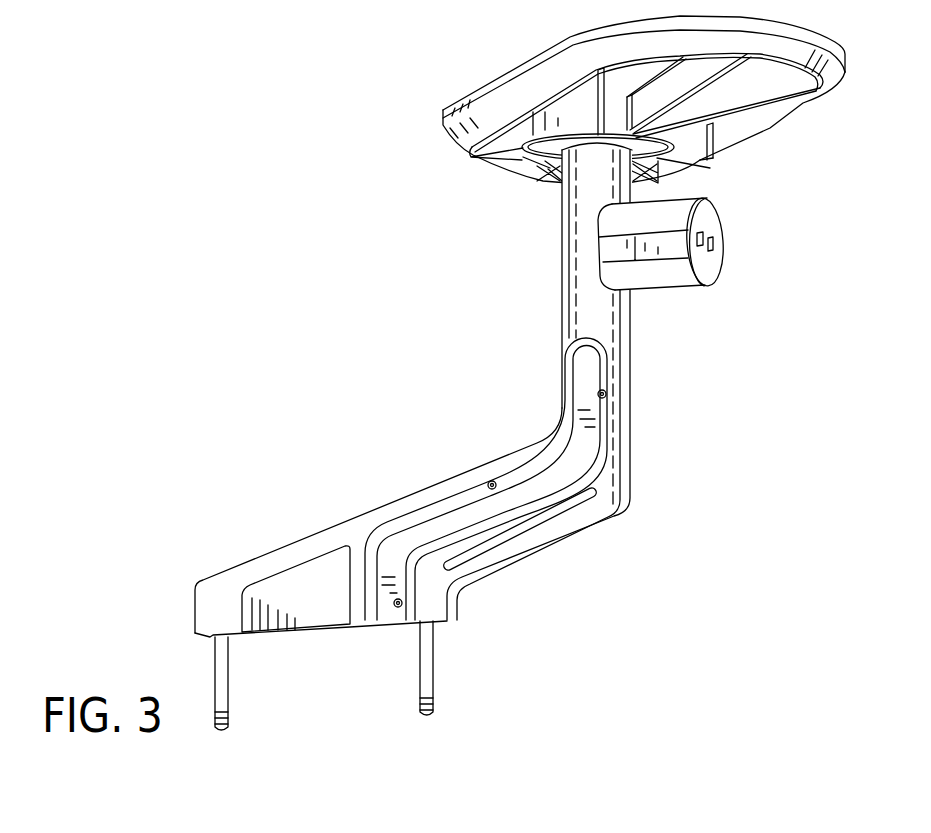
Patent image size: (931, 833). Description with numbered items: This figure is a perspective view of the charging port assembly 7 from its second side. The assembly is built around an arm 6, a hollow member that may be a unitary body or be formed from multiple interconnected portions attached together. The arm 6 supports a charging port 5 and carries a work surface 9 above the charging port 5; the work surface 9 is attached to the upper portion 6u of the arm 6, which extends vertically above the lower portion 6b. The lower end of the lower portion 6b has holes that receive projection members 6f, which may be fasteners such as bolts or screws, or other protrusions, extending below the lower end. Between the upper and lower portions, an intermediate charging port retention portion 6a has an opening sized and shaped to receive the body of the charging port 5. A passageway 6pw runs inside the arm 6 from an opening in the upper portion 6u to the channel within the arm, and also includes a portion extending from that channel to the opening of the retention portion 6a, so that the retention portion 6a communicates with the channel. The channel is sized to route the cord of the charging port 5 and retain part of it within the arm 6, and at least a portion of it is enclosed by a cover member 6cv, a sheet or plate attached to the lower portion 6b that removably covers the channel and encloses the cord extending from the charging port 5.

The work surface 9 is at (527, 88).
The charging port assembly 7 is at (409, 210).
The upper portion 6u is at (563, 190).
The charging port 5 is at (710, 218).
The passageway 6pw is at (590, 297).
The intermediate charging port retention portion 6a is at (668, 275).
The lower portion 6b is at (400, 498).
The arm 6 is at (665, 453).
The cover member 6cv is at (457, 521).
The projection members 6f is at (230, 703).